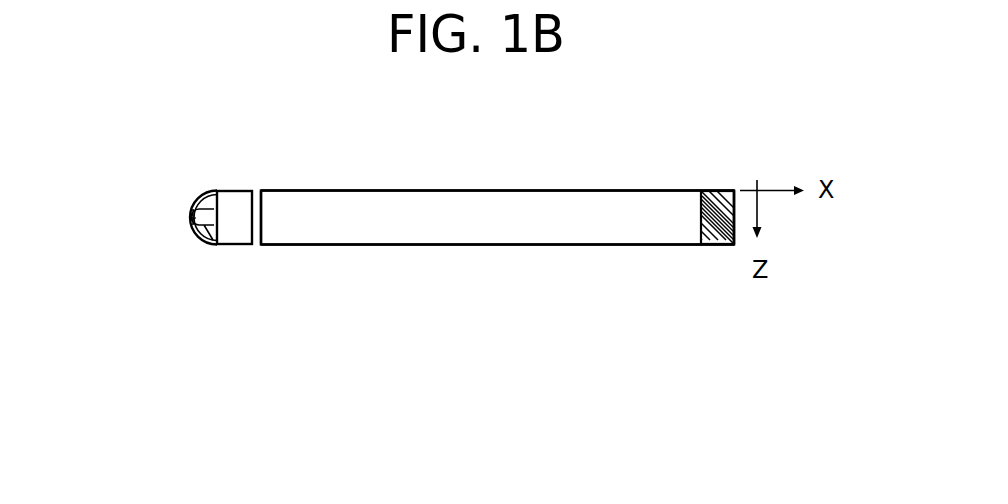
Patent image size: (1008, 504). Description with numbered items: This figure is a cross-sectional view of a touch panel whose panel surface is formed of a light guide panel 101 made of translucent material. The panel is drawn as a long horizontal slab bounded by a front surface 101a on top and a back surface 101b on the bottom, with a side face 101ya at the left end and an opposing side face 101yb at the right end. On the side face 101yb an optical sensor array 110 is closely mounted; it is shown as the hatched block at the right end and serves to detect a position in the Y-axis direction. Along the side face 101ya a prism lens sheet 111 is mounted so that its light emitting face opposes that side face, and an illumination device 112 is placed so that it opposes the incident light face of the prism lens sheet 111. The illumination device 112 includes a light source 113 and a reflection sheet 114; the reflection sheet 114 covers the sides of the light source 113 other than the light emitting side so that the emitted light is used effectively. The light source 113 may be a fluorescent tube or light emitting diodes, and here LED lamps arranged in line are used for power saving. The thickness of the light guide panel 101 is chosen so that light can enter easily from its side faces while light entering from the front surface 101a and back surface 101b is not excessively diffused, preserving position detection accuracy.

The light guide panel 101 is at (515, 190).
The front surface 101a is at (397, 190).
The back surface 101b is at (512, 245).
The side face 101ya is at (262, 217).
The side face 101yb is at (699, 239).
The optical sensor array 110 is at (716, 190).
The prism lens sheet 111 is at (232, 191).
The illumination device 112 is at (178, 188).
The light source 113 is at (215, 246).
The reflection sheet 114 is at (200, 240).